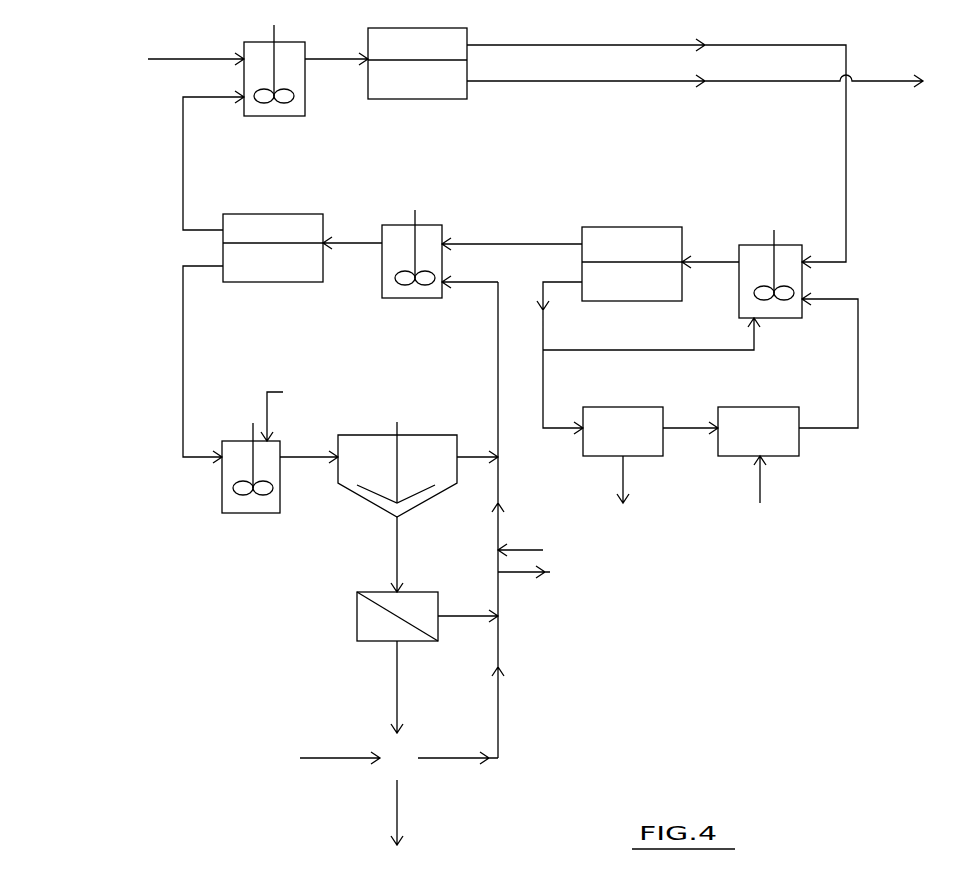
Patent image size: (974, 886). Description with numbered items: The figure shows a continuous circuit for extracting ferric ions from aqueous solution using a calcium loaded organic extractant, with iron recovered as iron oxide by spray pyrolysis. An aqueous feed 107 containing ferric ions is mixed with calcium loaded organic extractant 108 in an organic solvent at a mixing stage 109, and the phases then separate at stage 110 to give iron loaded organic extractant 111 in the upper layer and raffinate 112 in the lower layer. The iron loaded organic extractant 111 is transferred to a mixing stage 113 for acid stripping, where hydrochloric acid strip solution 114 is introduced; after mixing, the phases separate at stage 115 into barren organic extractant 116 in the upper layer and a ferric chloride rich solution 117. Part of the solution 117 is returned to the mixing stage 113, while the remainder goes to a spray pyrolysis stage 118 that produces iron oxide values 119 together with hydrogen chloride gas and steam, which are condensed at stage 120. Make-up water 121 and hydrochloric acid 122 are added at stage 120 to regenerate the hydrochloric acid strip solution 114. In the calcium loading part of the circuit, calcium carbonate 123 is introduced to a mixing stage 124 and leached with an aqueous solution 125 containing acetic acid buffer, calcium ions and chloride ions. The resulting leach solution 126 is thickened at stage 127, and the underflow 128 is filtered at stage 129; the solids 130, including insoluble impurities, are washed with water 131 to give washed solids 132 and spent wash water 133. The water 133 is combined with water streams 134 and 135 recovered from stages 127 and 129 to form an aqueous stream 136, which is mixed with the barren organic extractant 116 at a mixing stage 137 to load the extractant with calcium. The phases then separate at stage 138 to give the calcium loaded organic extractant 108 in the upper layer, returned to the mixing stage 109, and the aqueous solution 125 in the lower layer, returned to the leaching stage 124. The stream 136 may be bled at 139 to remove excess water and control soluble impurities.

The aqueous feed 107 is at (196, 49).
The calcium loaded organic extractant 108 is at (192, 160).
The mixing stage 109 is at (274, 86).
The separation stage 110 is at (386, 85).
The iron loaded organic extractant 111 is at (656, 143).
The raffinate 112 is at (713, 94).
The mixing stage for acid stripping 113 is at (770, 291).
The hydrochloric acid strip solution 114 is at (847, 360).
The separation stage 115 is at (660, 278).
The barren organic extractant 116 is at (512, 236).
The ferric chloride rich solution 117 is at (633, 358).
The spray pyrolysis stage 118 is at (650, 431).
The iron oxide values 119 is at (625, 496).
The condensation stage 120 is at (758, 431).
The make-up water 121 is at (777, 496).
The hydrochloric acid 122 is at (760, 479).
The calcium carbonate 123 is at (289, 411).
The mixing stage 124 is at (251, 485).
The aqueous solution 125 is at (179, 364).
The leach solution 126 is at (309, 447).
The thickening stage 127 is at (397, 465).
The underflow 128 is at (411, 554).
The filtering stage 129 is at (375, 662).
The solids 130 is at (398, 758).
The water 131 is at (321, 758).
The washed solids 132 is at (397, 830).
The spent wash water 133 is at (458, 777).
The water stream 134 is at (477, 442).
The water stream 135 is at (468, 603).
The aqueous stream 136 is at (473, 517).
The mixing stage 137 is at (412, 270).
The separation stage 138 is at (302, 264).
The bleed 139 is at (542, 561).